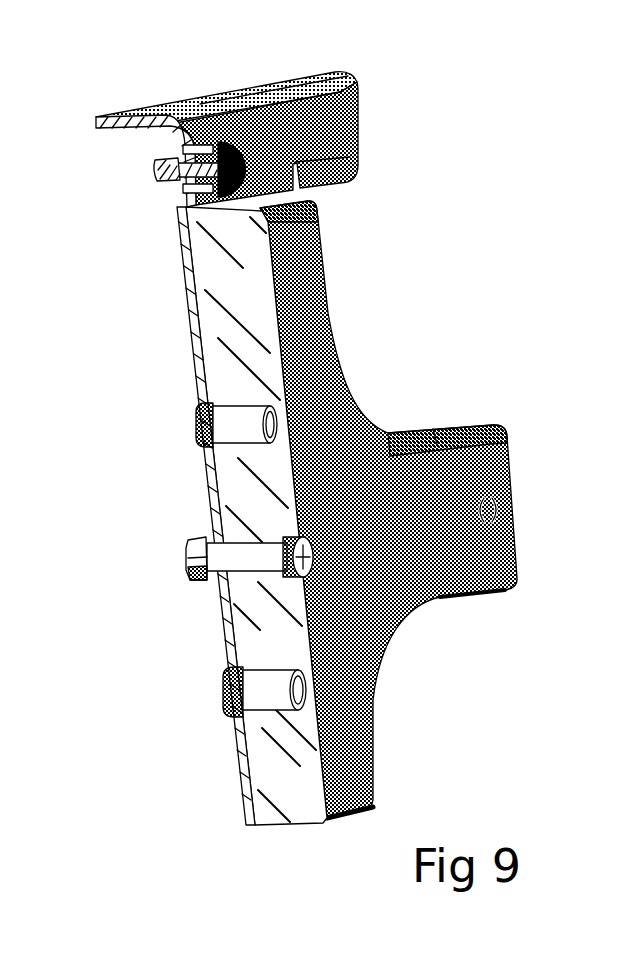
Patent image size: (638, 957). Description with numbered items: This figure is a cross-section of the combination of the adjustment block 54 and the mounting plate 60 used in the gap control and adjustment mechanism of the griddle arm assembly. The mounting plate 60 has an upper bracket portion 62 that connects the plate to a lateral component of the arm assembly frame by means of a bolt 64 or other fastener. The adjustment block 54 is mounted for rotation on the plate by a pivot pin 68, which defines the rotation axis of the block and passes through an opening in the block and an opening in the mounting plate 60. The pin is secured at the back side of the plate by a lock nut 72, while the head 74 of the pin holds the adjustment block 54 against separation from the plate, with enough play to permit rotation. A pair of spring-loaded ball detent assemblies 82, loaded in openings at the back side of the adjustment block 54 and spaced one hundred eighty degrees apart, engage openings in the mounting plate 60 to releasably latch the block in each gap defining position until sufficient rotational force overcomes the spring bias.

The adjustment block 54 is at (347, 470).
The mounting plate 60 is at (197, 351).
The upper bracket portion 62 is at (345, 128).
The bolt 64 is at (231, 147).
The pivot pin 68 is at (238, 586).
The lock nut 72 is at (182, 562).
The head 74 is at (292, 582).
The spring-loaded ball detent assembly 82 is at (228, 452).